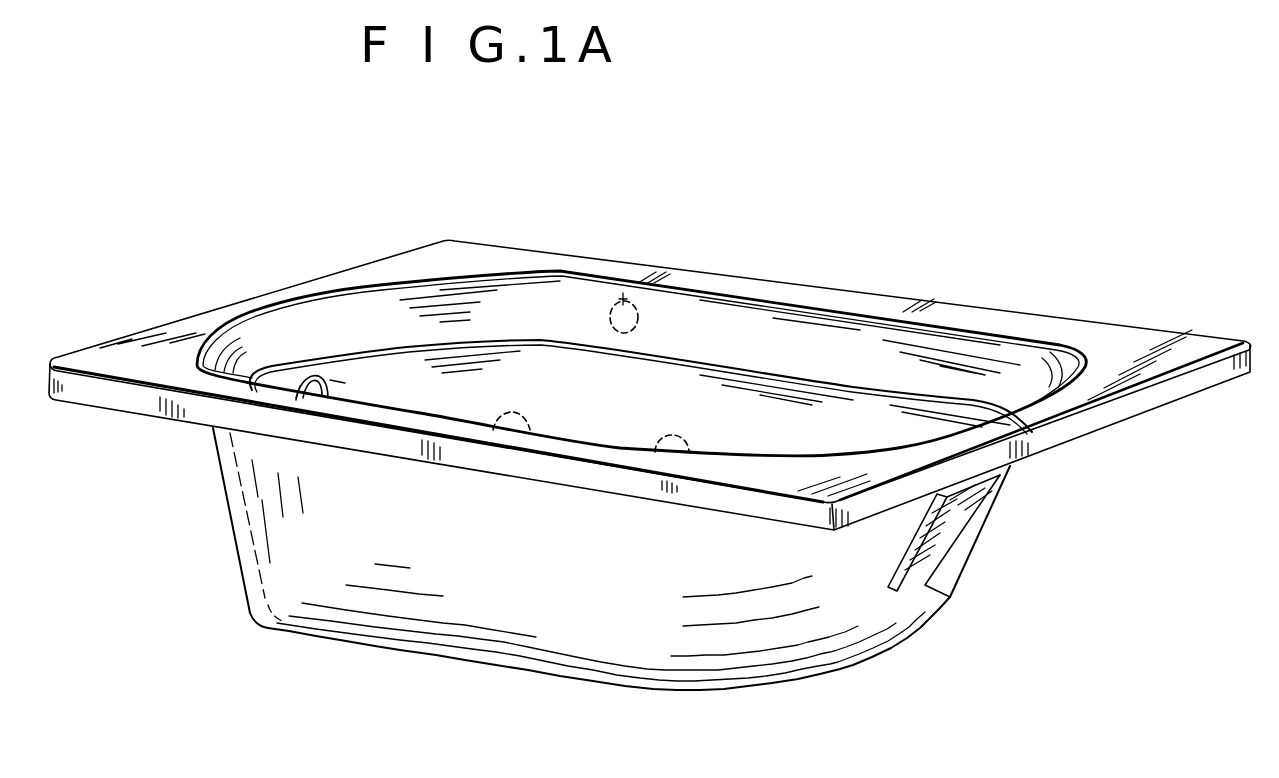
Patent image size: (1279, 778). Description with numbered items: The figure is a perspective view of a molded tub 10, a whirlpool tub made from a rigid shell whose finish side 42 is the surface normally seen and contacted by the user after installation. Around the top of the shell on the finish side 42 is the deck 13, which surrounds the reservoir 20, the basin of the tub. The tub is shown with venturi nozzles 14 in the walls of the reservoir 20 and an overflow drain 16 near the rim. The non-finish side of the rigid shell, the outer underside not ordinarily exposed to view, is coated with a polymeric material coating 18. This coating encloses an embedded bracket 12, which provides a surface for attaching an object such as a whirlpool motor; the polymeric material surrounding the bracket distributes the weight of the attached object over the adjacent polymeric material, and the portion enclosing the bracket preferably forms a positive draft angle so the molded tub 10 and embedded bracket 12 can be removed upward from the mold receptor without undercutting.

The molded tub 10 is at (914, 283).
The embedded bracket 12 is at (935, 508).
The deck 13 is at (1100, 340).
The venturi nozzles 14 is at (623, 296).
The overflow drain 16 is at (297, 377).
The polymeric material coating 18 is at (830, 652).
The reservoir 20 is at (398, 367).
The finish side 42 is at (1165, 328).